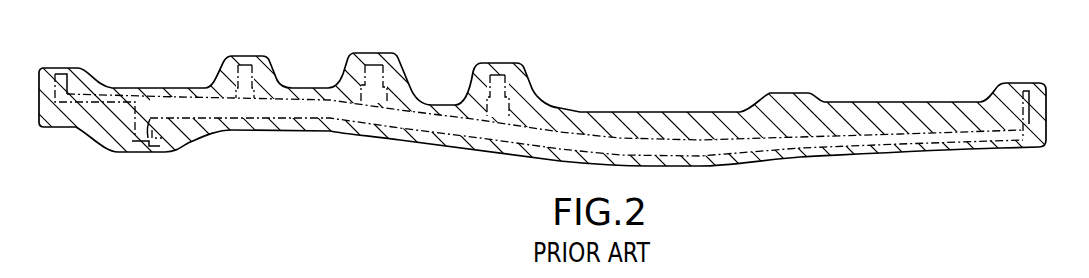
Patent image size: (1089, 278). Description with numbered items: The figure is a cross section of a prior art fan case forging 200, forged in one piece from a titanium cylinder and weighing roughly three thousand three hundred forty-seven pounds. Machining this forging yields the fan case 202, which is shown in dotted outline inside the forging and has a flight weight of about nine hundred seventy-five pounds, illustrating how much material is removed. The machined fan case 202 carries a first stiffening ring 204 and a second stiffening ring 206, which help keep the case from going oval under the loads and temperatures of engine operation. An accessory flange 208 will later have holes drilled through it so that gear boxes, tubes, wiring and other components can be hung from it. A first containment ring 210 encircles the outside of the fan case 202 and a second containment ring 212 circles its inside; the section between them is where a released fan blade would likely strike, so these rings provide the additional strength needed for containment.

The fan case forging 200 is at (958, 98).
The fan case 202 is at (872, 99).
The first stiffening ring 204 is at (375, 63).
The second stiffening ring 206 is at (500, 73).
The accessory flange 208 is at (793, 98).
The first containment ring 210 is at (245, 63).
The second containment ring 212 is at (152, 147).